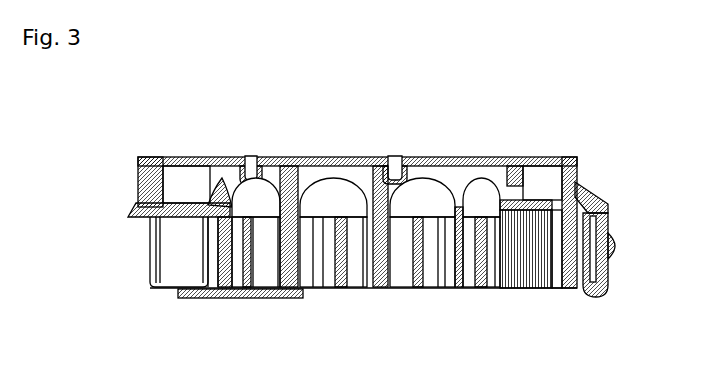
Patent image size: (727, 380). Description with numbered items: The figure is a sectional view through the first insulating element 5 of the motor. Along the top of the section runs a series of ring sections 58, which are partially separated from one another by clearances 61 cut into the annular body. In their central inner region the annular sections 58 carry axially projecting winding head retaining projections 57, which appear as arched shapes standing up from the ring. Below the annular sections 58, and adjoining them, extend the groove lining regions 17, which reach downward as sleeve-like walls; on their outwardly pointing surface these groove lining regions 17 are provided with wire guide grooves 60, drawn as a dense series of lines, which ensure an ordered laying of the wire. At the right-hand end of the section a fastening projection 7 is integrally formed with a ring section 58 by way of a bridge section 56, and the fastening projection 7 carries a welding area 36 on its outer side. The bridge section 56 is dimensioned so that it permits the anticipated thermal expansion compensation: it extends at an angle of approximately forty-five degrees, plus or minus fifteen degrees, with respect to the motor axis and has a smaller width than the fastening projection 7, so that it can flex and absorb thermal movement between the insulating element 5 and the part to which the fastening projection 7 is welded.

The first insulating element 5 is at (616, 88).
The fastening projection 7 is at (599, 222).
The groove lining region 17 is at (170, 252).
The welding area 36 is at (612, 253).
The bridge section 56 is at (600, 200).
The winding head retaining projection 57 is at (327, 185).
The ring section 58 is at (207, 157).
The wire guide groove 60 is at (514, 291).
The clearance 61 is at (158, 157).